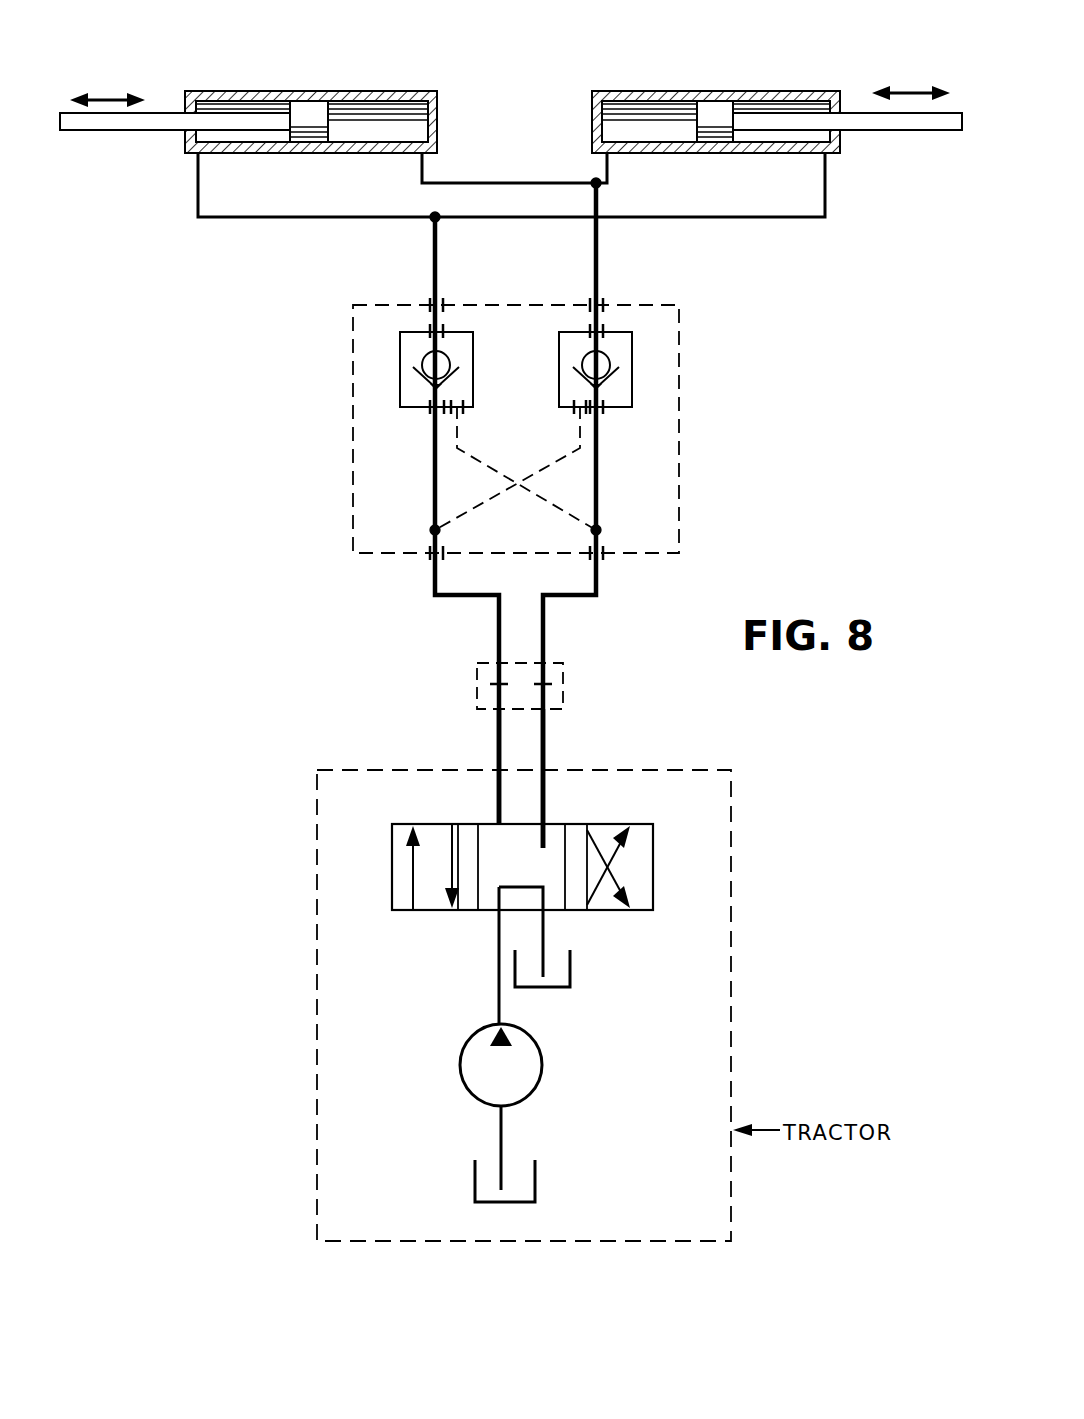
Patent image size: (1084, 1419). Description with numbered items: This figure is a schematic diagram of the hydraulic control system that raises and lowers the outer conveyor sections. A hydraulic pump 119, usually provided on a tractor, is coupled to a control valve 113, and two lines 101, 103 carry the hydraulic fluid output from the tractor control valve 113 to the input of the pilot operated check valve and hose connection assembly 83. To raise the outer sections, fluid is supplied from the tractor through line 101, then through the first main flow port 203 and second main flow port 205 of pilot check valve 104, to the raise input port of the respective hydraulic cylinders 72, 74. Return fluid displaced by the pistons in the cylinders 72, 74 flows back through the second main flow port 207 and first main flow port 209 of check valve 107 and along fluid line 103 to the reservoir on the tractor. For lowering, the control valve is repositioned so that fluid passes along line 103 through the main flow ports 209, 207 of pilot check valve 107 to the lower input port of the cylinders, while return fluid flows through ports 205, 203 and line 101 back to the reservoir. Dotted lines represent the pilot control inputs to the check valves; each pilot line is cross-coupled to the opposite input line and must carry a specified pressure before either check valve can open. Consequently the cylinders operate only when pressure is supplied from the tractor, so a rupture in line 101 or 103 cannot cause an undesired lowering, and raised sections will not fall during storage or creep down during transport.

The hydraulic cylinder 72 is at (391, 90).
The hydraulic cylinder 74 is at (660, 90).
The pilot operated check valve and hose connection assembly 83 is at (660, 501).
The line 101 is at (499, 740).
The line 103 is at (543, 740).
The pilot check valve 104 is at (400, 365).
The pilot check valve 107 is at (632, 360).
The control valve 113 is at (392, 858).
The hydraulic pump 119 is at (545, 1068).
The first main flow port 203 is at (430, 412).
The second main flow port 205 is at (430, 325).
The second main flow port 207 is at (604, 325).
The first main flow port 209 is at (603, 412).